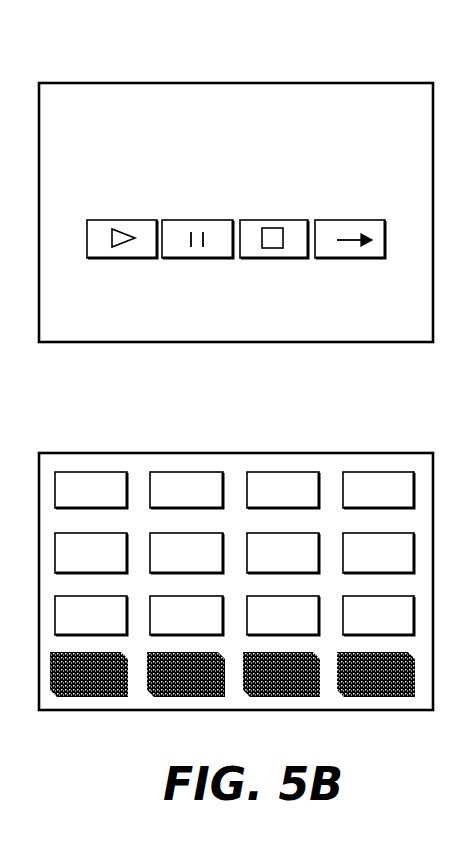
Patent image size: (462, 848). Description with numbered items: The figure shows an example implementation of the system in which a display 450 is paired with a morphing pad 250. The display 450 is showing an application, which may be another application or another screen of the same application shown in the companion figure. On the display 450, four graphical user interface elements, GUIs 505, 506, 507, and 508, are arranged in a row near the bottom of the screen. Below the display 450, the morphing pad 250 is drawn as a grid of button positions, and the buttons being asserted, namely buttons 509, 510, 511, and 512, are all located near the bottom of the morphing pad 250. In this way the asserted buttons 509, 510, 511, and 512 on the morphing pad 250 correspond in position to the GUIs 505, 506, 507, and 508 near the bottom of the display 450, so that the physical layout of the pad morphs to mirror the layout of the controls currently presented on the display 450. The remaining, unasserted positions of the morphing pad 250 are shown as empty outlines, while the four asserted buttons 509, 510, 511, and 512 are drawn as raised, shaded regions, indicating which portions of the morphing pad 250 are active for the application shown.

The display 450 is at (75, 83).
The GUI 505 is at (130, 258).
The GUI 506 is at (205, 258).
The GUI 507 is at (280, 258).
The GUI 508 is at (363, 258).
The morphing pad 250 is at (315, 453).
The button 509 is at (83, 697).
The button 510 is at (192, 697).
The button 511 is at (283, 697).
The button 512 is at (403, 697).